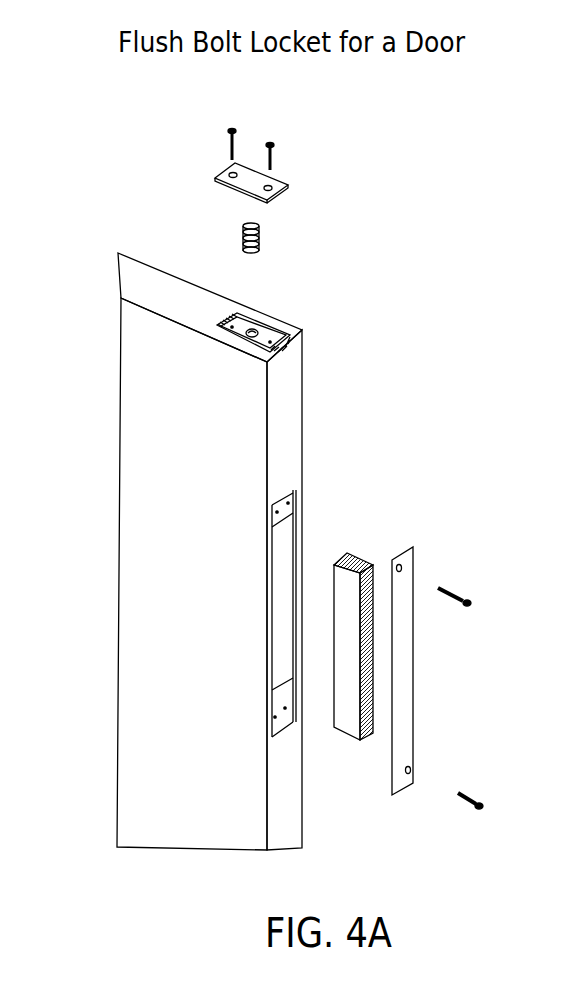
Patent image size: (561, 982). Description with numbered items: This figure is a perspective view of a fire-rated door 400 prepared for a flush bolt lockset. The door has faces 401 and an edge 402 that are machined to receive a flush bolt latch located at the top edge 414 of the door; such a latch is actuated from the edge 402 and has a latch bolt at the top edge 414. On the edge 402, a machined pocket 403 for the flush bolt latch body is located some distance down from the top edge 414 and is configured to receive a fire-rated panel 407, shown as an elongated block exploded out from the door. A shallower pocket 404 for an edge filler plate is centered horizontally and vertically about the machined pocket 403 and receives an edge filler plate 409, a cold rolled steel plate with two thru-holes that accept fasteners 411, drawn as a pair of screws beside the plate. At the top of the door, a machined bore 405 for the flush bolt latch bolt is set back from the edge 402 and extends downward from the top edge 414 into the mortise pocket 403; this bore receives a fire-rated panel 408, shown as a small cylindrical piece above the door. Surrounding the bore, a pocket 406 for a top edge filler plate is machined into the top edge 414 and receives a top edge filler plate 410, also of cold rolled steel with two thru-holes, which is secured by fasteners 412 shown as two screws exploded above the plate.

The fire-rated door 400 is at (330, 502).
The faces 401 is at (150, 830).
The edge 402 is at (283, 827).
The machined pocket 403 is at (283, 550).
The pocket 404 is at (296, 507).
The machined bore 405 is at (262, 326).
The pocket 406 is at (242, 322).
The fire-rated panel 407 is at (360, 557).
The fire-rated panel 408 is at (242, 240).
The edge filler plate 409 is at (402, 700).
The top edge filler plate 410 is at (273, 195).
The fasteners 411 is at (472, 602).
The fasteners 412 is at (233, 127).
The top edge 414 is at (150, 288).